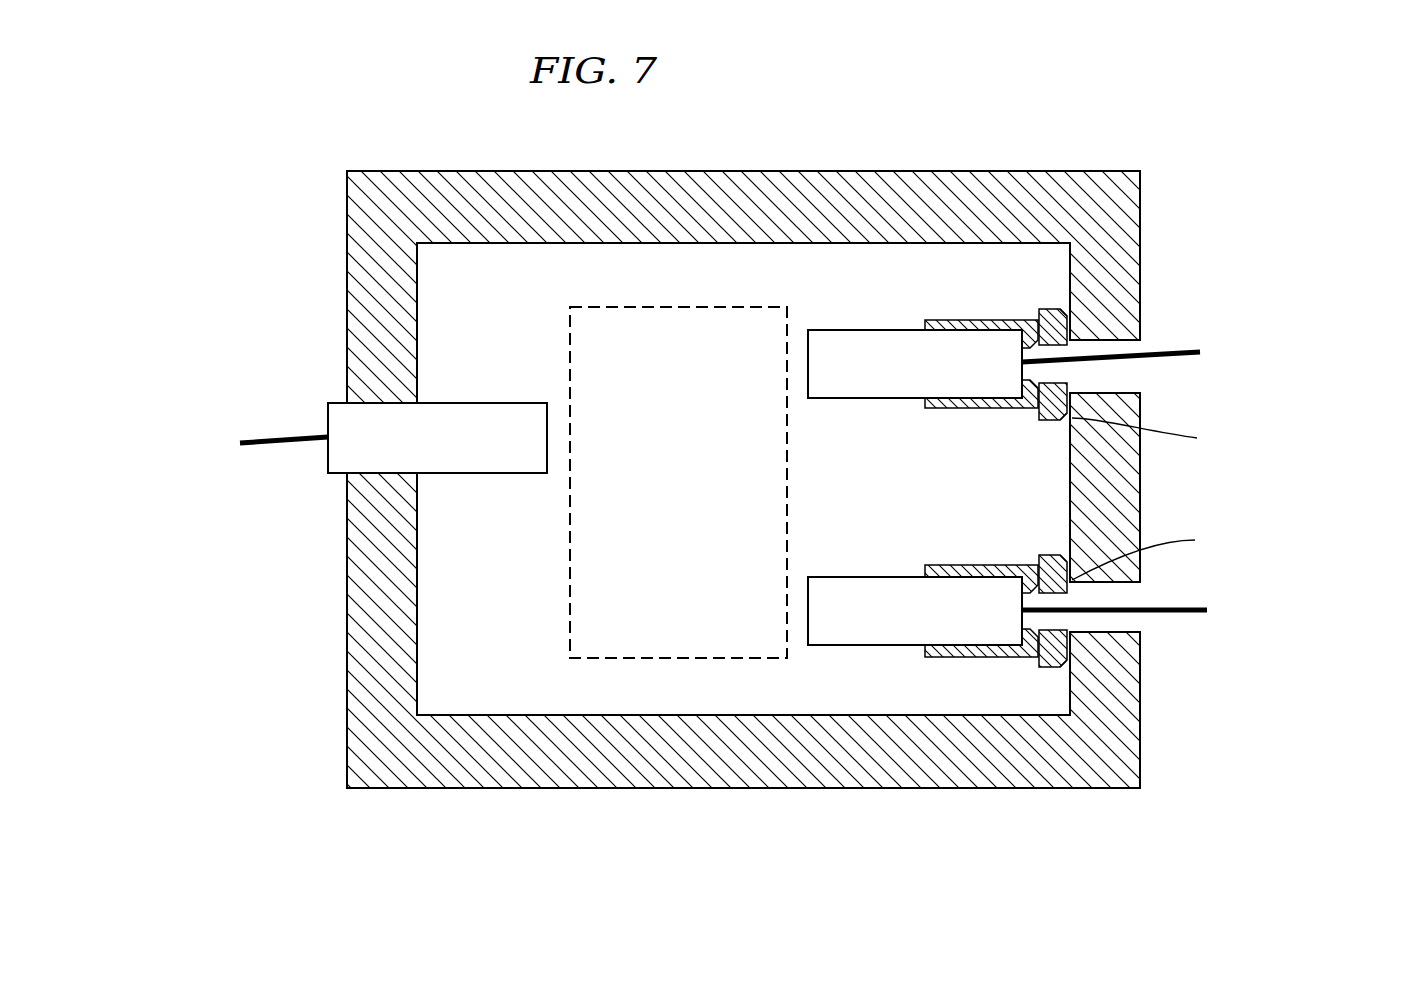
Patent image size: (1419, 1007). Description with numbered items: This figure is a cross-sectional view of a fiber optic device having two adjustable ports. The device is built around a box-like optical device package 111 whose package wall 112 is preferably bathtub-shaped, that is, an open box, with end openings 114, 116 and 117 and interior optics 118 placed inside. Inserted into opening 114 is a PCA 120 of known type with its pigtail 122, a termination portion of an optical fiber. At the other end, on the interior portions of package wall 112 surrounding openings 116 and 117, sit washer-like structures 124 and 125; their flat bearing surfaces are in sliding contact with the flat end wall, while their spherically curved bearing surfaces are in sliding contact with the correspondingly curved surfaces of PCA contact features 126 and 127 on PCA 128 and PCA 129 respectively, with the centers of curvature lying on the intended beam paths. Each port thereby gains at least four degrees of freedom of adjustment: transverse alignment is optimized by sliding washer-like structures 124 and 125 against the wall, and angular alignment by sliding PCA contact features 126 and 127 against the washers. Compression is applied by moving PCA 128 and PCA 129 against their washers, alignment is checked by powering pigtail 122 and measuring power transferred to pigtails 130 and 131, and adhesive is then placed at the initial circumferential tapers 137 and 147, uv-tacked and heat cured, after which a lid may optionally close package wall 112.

The optical device package 111 is at (609, 129).
The package wall 112 is at (530, 777).
The end opening 114 is at (342, 397).
The end opening 116 is at (1152, 343).
The end opening 117 is at (1148, 626).
The interior optics 118 is at (570, 320).
The PCA 120 is at (338, 475).
The pigtail 122 is at (255, 448).
The washer-like structure 124 is at (1045, 422).
The washer-like structure 125 is at (1045, 668).
The PCA contact feature 126 is at (965, 406).
The PCA contact feature 127 is at (930, 570).
The PCA 128 is at (868, 330).
The PCA 129 is at (832, 647).
The pigtail 130 is at (1193, 360).
The pigtail 131 is at (1192, 607).
The initial circumferential taper 137 is at (985, 672).
The initial circumferential taper 147 is at (1175, 732).